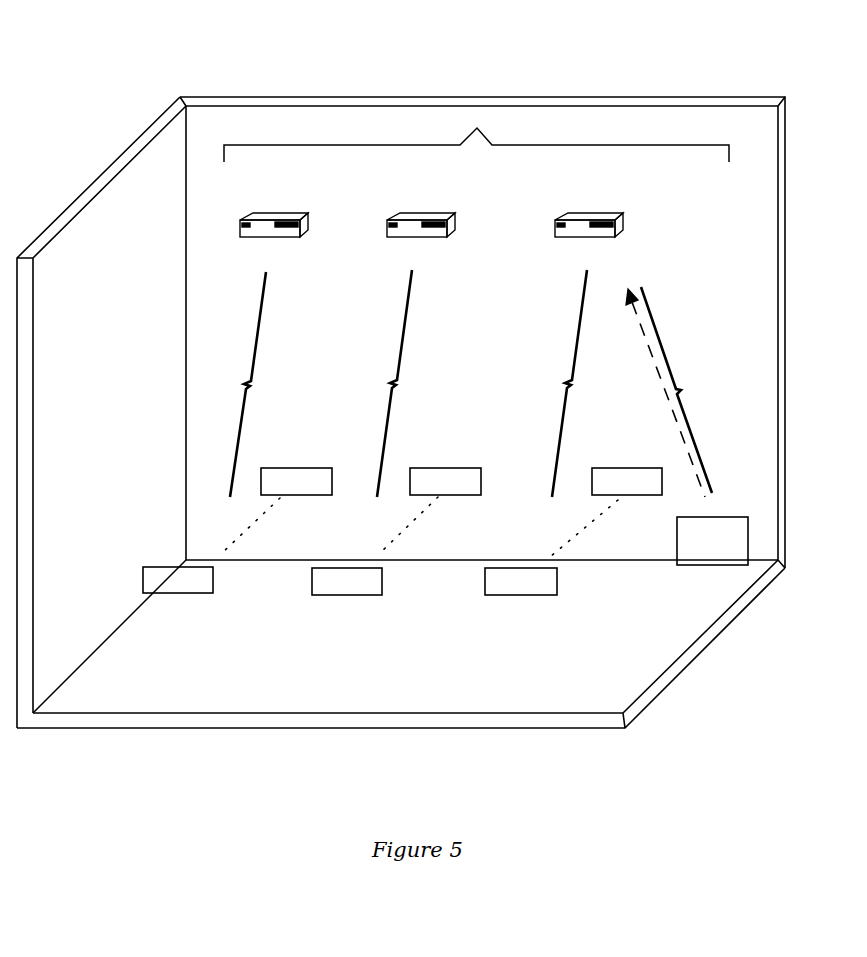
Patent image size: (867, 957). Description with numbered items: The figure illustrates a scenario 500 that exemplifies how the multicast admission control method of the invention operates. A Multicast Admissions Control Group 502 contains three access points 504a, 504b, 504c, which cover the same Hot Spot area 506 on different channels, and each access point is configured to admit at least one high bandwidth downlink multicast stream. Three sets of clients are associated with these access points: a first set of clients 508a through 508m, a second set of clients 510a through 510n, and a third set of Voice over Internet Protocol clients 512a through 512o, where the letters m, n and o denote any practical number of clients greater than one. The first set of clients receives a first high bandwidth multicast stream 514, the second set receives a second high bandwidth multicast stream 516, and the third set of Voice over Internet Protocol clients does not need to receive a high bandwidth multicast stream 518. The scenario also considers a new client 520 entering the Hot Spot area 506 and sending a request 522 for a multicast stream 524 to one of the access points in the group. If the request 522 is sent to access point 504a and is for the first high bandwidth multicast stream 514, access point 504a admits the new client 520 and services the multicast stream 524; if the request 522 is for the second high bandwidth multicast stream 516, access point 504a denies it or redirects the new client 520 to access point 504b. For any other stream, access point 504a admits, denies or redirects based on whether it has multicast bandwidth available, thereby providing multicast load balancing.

The scenario 500 is at (159, 60).
The Multicast Admissions Control Group 502 is at (476, 138).
The access point 504a is at (240, 226).
The access point 504b is at (388, 226).
The access point 504c is at (556, 226).
The Hot Spot area 506 is at (700, 655).
The client 508a is at (143, 580).
The client 508m is at (261, 483).
The client 510a is at (312, 582).
The client 510n is at (410, 482).
The Voice over Internet Protocol client 512a is at (485, 582).
The Voice over Internet Protocol client 512o is at (592, 482).
The first high bandwidth multicast stream 514 is at (250, 358).
The second high bandwidth multicast stream 516 is at (398, 358).
The high bandwidth multicast stream 518 is at (573, 358).
The new client 520 is at (678, 552).
The request 522 is at (676, 420).
The multicast stream 524 is at (688, 418).